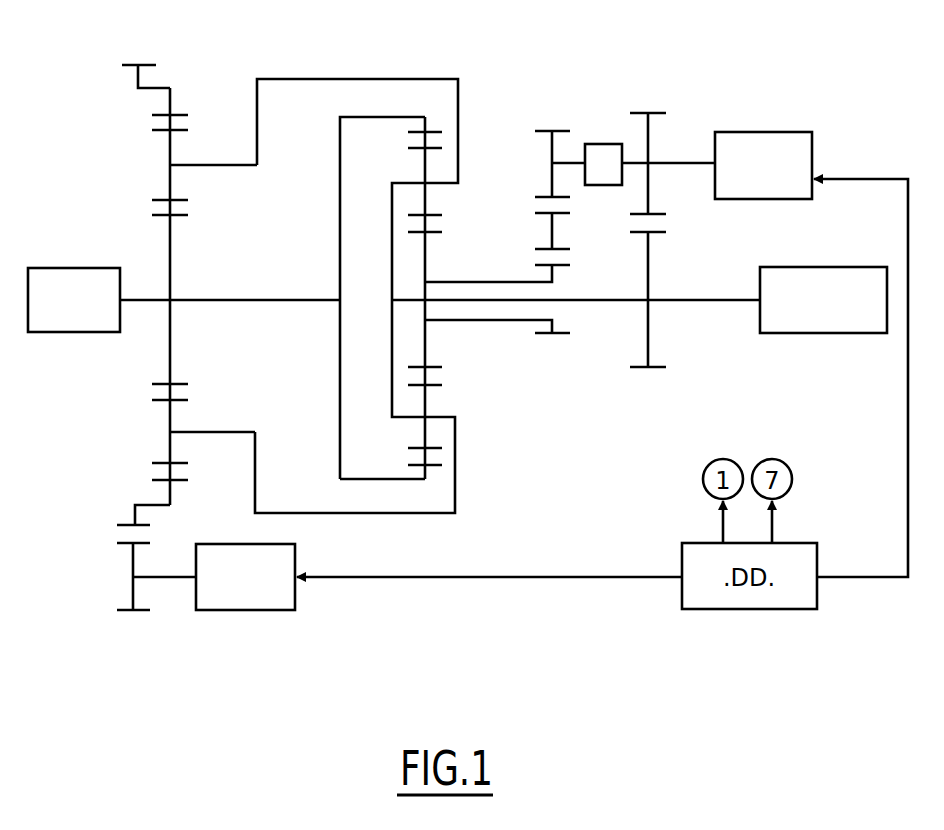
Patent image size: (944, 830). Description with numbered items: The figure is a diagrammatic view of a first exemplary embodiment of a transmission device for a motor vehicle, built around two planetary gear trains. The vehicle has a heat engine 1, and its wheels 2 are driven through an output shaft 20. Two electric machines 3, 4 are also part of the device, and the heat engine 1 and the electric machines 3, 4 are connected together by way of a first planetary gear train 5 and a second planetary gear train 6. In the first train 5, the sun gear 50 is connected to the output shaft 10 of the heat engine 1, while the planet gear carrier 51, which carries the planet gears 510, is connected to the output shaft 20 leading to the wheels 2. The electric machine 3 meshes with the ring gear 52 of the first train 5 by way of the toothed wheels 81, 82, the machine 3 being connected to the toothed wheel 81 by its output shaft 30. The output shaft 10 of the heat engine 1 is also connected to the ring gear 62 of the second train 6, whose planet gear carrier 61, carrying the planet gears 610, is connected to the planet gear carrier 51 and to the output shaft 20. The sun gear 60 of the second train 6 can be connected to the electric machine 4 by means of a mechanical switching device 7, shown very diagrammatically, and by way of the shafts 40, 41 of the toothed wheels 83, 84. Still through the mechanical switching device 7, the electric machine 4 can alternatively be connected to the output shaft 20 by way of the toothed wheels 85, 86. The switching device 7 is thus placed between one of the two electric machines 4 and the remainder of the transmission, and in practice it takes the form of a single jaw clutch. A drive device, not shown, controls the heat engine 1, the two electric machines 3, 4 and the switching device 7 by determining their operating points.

The heat engine 1 is at (66, 308).
The output shaft of the heat engine 10 is at (146, 303).
The wheels 2 is at (812, 312).
The output shaft 20 is at (722, 303).
The electric machine 3 is at (258, 592).
The output shaft of the electric machine 30 is at (173, 586).
The electric machine 4 is at (790, 162).
The shaft 40 is at (675, 160).
The shaft 41 is at (570, 160).
The mechanical switching device 7 is at (605, 155).
The planetary gear train 5 is at (136, 210).
The sun gear 50 is at (172, 257).
The planet gear carrier 51 is at (460, 100).
The planet gears 510 is at (172, 183).
The ring gear 52 is at (138, 88).
The planetary gear train 6 is at (464, 214).
The sun gear 60 is at (426, 255).
The planet gear carrier 61 is at (388, 259).
The planet gears 610 is at (423, 170).
The ring gear 62 is at (426, 472).
The toothed wheel 81 is at (130, 516).
The toothed wheel 82 is at (131, 560).
The toothed wheel 83 is at (554, 228).
The toothed wheel 84 is at (550, 175).
The toothed wheel 85 is at (650, 273).
The toothed wheel 86 is at (651, 190).